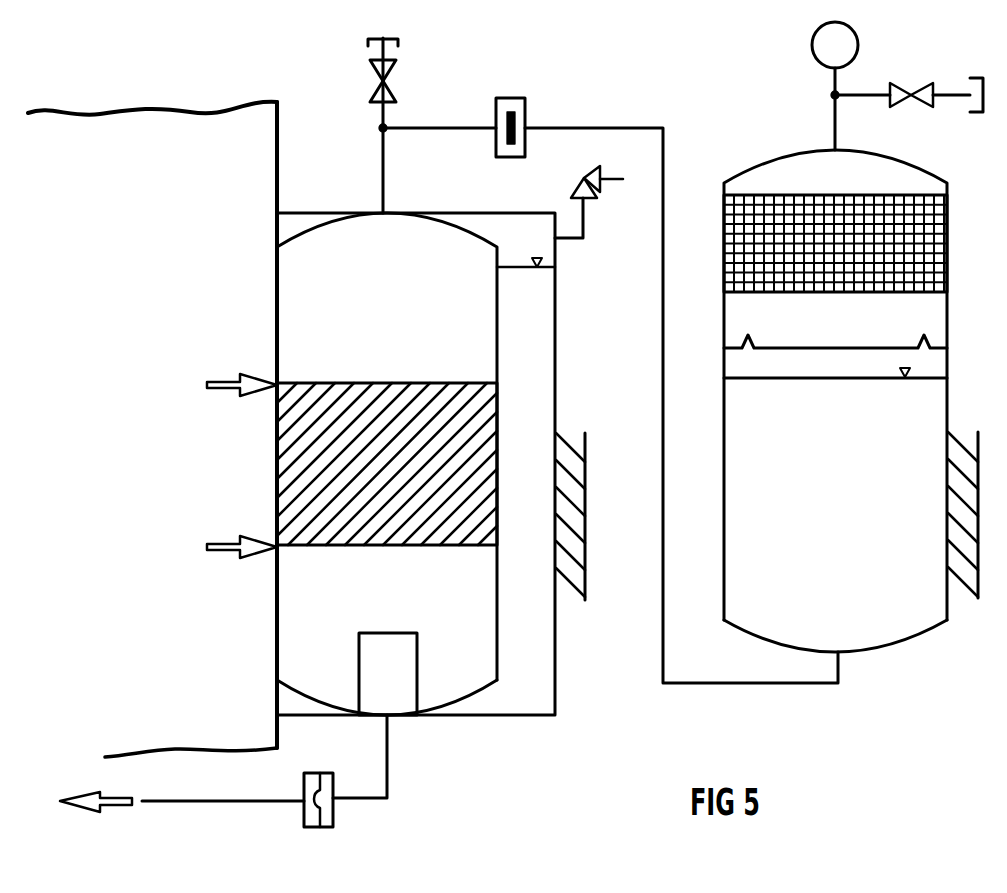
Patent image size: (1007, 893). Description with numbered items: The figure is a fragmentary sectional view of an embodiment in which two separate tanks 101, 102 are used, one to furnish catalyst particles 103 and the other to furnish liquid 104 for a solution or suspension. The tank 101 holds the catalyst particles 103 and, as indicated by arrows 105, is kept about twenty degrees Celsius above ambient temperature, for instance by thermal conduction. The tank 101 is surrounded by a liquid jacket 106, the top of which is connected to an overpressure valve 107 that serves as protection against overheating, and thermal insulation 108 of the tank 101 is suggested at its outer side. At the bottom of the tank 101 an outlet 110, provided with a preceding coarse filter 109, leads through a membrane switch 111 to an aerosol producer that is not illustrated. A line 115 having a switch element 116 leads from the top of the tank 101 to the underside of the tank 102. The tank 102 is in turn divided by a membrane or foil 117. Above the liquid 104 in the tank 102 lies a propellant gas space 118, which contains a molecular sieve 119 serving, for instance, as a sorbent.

The tank 101 is at (497, 320).
The tank 102 is at (948, 310).
The catalyst particles 103 is at (397, 525).
The liquid 104 is at (785, 487).
The arrows 105 is at (212, 388).
The liquid jacket 106 is at (556, 375).
The overpressure valve 107 is at (583, 225).
The thermal insulation 108 is at (585, 533).
The coarse filter 109 is at (359, 658).
The outlet 110 is at (387, 773).
The membrane switch 111 is at (333, 778).
The line 115 is at (663, 152).
The switch element 116 is at (525, 100).
The membrane or foil 117 is at (935, 340).
The propellant gas space 118 is at (893, 170).
The molecular sieve 119 is at (898, 233).